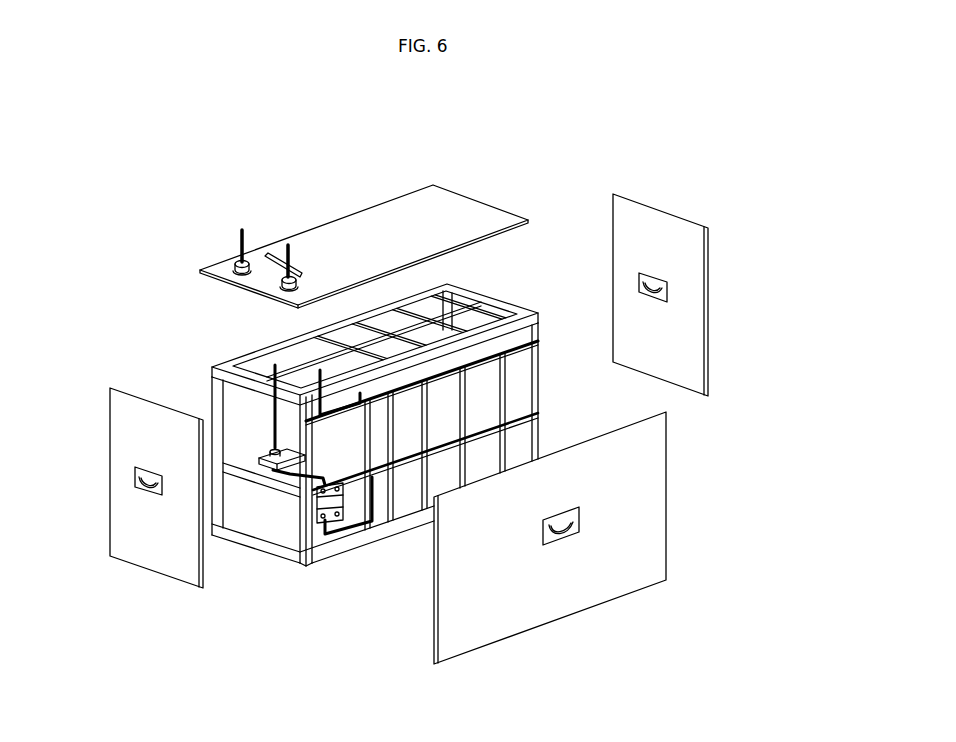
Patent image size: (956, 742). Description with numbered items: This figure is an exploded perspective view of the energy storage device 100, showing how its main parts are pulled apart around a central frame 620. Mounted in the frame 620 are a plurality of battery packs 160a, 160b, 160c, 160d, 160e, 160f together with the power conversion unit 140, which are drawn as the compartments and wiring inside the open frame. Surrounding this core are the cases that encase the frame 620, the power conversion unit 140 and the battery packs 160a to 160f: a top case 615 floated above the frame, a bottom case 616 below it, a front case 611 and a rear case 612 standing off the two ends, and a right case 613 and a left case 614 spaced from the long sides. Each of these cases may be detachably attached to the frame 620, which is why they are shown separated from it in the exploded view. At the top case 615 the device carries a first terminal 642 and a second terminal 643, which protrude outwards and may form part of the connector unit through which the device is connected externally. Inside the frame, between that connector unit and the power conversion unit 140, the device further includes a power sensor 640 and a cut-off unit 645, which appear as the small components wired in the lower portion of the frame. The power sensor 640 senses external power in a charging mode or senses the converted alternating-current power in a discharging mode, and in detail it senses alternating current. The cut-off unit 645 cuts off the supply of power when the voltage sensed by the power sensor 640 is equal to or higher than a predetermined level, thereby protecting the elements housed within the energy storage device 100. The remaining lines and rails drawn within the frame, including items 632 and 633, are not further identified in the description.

The energy storage device 100 is at (118, 162).
The power conversion unit 140 is at (375, 435).
The battery pack 160a is at (380, 392).
The battery pack 160b is at (372, 432).
The battery pack 160c is at (447, 400).
The battery pack 160d is at (490, 420).
The battery pack 160e is at (560, 427).
The battery pack 160f is at (520, 423).
The front case 611 is at (143, 534).
The rear case 612 is at (687, 260).
The right case 613 is at (613, 572).
The left case 614 is at (213, 365).
The top case 615 is at (358, 232).
The bottom case 616 is at (347, 553).
The frame 620 is at (307, 553).
The connection cable 632 is at (376, 525).
The upper rail 633 is at (490, 312).
The power sensor 640 is at (262, 458).
The first terminal 642 is at (237, 237).
The second terminal 643 is at (280, 247).
The cut-off unit 645 is at (330, 515).